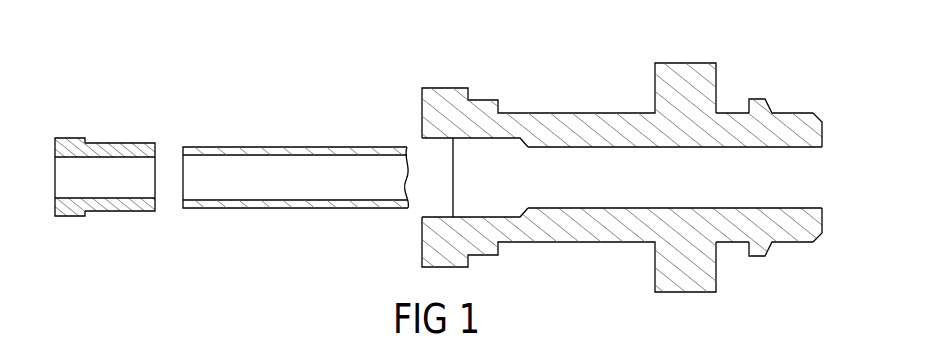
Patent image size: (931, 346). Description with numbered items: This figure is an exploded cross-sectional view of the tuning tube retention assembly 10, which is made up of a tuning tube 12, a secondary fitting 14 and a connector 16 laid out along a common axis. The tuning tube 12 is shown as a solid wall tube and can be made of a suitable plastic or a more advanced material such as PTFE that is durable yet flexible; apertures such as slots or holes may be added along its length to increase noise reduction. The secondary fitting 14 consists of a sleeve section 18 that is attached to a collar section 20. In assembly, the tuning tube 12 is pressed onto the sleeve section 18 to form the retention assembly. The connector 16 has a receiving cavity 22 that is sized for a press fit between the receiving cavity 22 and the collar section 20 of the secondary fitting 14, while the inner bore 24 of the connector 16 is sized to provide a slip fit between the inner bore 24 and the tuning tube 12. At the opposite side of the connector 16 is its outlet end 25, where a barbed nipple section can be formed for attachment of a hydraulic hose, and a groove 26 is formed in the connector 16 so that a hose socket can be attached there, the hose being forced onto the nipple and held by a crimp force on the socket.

The tuning tube retention assembly 10 is at (383, 73).
The tuning tube 12 is at (240, 151).
The secondary fitting 14 is at (93, 148).
The connector 16 is at (468, 110).
The sleeve section 18 is at (127, 205).
The collar section 20 is at (68, 215).
The receiving cavity 22 is at (428, 210).
The inner bore 24 is at (808, 174).
The outlet end 25 is at (827, 128).
The groove 26 is at (735, 97).